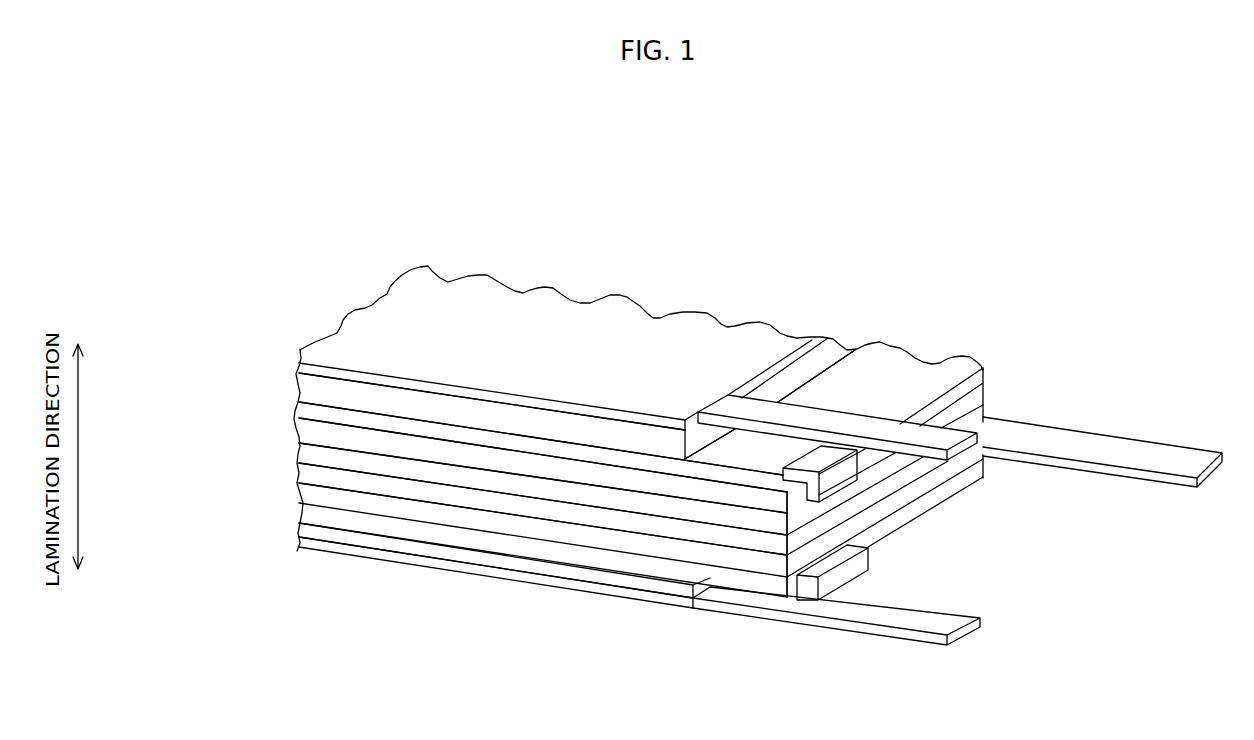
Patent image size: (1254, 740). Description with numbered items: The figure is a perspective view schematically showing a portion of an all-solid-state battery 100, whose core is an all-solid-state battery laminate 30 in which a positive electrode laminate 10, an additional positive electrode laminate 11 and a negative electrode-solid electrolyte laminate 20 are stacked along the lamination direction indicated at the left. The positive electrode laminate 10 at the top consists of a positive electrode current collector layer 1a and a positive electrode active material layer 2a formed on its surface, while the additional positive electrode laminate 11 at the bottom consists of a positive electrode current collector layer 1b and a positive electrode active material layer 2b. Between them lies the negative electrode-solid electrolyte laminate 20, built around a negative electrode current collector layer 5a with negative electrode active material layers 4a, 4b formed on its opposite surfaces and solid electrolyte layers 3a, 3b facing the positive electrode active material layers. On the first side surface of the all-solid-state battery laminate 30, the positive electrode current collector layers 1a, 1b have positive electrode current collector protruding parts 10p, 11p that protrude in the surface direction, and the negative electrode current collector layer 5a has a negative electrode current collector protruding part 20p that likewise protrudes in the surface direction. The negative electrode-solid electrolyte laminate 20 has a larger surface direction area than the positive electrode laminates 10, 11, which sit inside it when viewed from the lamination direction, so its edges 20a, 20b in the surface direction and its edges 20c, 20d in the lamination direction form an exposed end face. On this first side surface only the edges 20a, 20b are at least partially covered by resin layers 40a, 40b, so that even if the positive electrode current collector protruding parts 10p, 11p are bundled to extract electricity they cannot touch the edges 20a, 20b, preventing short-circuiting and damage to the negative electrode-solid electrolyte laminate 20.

The all-solid-state battery 100 is at (381, 185).
The all-solid-state battery laminate 30 is at (160, 335).
The positive electrode laminate 10 is at (222, 325).
The additional positive electrode laminate 11 is at (222, 548).
The negative electrode-solid electrolyte laminate 20 is at (207, 392).
The positive electrode current collector layer 1a is at (298, 366).
The positive electrode active material layer 2a is at (298, 386).
The solid electrolyte layer 3a is at (298, 412).
The negative electrode active material layer 4a is at (298, 434).
The negative electrode current collector layer 5a is at (298, 456).
The negative electrode active material layer 4b is at (298, 476).
The solid electrolyte layer 3b is at (298, 497).
The positive electrode active material layer 2b is at (298, 531).
The positive electrode current collector layer 1b is at (298, 547).
The positive electrode current collector protruding part 10p is at (985, 427).
The positive electrode current collector protruding part 11p is at (958, 617).
The negative electrode current collector protruding part 20p is at (1170, 447).
The edge of negative electrode-solid electrolyte laminate in the surface direction 20a is at (948, 378).
The edge of negative electrode-solid electrolyte laminate in the surface direction 20b is at (977, 492).
The edge of negative electrode-solid electrolyte laminate in the lamination directio 20c is at (798, 518).
The edge of negative electrode-solid electrolyte laminate in the lamination directio 20d is at (958, 392).
The resin layer 40a is at (840, 476).
The resin layer 40b is at (862, 556).